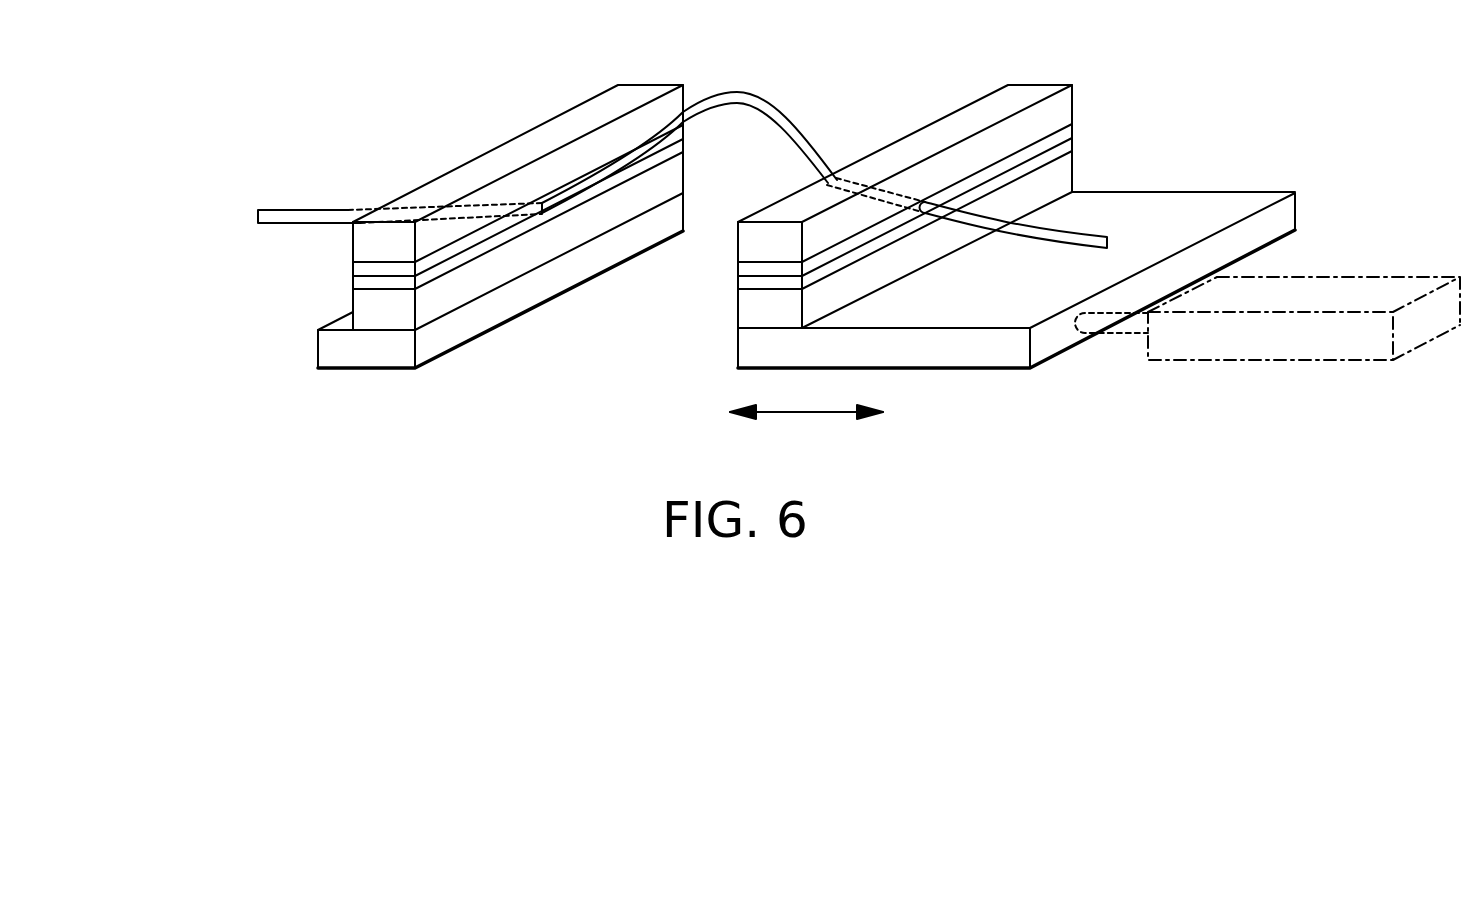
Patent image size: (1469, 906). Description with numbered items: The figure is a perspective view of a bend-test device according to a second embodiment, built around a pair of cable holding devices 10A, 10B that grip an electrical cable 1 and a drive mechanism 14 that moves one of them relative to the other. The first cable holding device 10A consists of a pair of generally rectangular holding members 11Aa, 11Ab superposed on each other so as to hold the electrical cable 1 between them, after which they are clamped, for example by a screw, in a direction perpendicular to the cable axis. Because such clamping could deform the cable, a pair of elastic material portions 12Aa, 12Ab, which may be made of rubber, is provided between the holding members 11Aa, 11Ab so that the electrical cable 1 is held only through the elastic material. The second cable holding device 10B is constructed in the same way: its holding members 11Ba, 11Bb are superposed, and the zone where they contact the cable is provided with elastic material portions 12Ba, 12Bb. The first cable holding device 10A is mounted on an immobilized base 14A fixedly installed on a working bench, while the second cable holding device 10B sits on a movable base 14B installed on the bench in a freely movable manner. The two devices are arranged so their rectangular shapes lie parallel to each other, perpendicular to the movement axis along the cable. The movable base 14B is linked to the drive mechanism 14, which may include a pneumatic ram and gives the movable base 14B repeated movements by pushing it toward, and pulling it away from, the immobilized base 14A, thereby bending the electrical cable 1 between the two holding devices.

The electrical cable 1 is at (737, 90).
The first cable holding device 10A is at (204, 224).
The holding member 11Aa is at (367, 253).
The elastic material portion 12Aa is at (368, 270).
The elastic material portion 12Ab is at (368, 280).
The holding member 11Ab is at (368, 302).
The immobilized base 14A is at (365, 345).
The second cable holding device 10B is at (1218, 60).
The holding member 11Ba is at (1058, 112).
The elastic material portion 12Ba is at (1063, 138).
The elastic material portion 12Bb is at (1063, 152).
The holding member 11Bb is at (1063, 175).
The movable base 14B is at (928, 345).
The drive mechanism 14 is at (1238, 340).